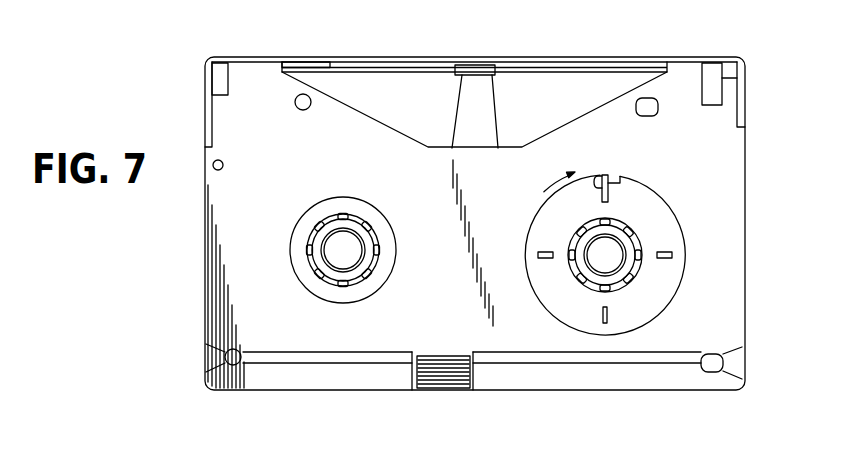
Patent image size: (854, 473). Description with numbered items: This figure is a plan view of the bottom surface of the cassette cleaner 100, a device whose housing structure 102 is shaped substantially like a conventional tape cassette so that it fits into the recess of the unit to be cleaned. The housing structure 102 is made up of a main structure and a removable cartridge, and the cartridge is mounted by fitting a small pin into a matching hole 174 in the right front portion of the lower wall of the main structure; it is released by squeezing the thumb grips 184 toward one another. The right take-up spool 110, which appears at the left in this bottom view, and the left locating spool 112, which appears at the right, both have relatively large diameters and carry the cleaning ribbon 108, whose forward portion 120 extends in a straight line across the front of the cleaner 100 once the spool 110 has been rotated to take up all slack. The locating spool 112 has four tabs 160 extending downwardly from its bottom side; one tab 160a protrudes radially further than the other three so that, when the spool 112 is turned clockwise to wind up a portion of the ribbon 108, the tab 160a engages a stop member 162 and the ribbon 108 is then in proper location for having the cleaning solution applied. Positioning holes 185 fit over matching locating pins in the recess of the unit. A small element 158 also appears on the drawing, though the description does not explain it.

The cassette cleaner 100 is at (190, 218).
The housing structure 102 is at (216, 268).
The cleaning ribbon 108 is at (405, 68).
The right take-up spool 110 is at (394, 266).
The left locating spool 112 is at (652, 212).
The forward ribbon portion 120 is at (518, 68).
The door slide member 158 is at (316, 62).
The tabs 160 is at (672, 257).
The tab 160a is at (598, 178).
The stop member 162 is at (620, 178).
The hole 174 is at (224, 165).
The thumb grips 184 is at (437, 360).
The positioning holes 185 is at (305, 110).